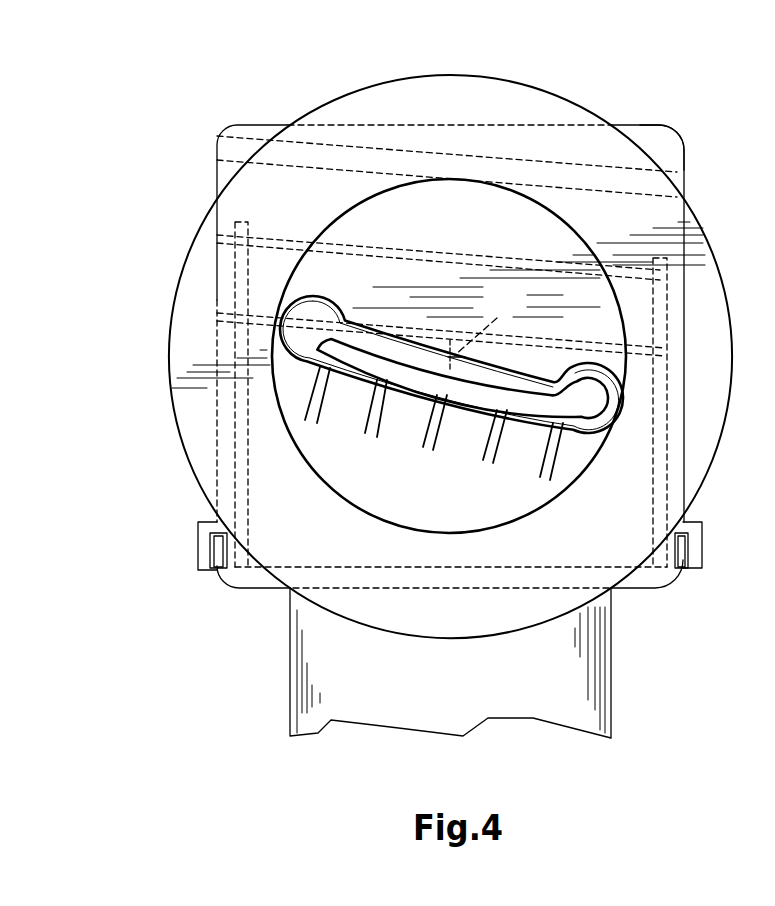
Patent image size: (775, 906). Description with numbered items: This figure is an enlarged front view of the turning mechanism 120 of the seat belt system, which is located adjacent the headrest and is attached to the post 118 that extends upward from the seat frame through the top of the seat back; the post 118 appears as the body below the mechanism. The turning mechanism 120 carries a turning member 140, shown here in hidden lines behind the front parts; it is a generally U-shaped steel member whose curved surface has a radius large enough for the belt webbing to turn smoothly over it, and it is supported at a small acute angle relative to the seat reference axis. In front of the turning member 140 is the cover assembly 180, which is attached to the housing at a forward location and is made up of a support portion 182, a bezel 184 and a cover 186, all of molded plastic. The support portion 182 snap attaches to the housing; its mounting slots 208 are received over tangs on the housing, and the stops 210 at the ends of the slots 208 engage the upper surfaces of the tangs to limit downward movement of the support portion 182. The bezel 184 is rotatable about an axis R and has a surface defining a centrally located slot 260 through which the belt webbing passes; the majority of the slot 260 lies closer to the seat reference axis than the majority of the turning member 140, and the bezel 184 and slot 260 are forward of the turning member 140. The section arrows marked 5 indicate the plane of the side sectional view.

The section line 5- 5 is at (452, 65).
The post 118 is at (547, 690).
The turning mechanism 120 is at (633, 114).
The turning member 140 is at (278, 240).
The cover assembly 180 is at (288, 128).
The support portion 182 is at (663, 148).
The bezel 184 is at (497, 213).
The cover 186 is at (192, 277).
The mounting slots 208 is at (216, 548).
The stops 210 is at (209, 521).
The slot 260 is at (580, 418).